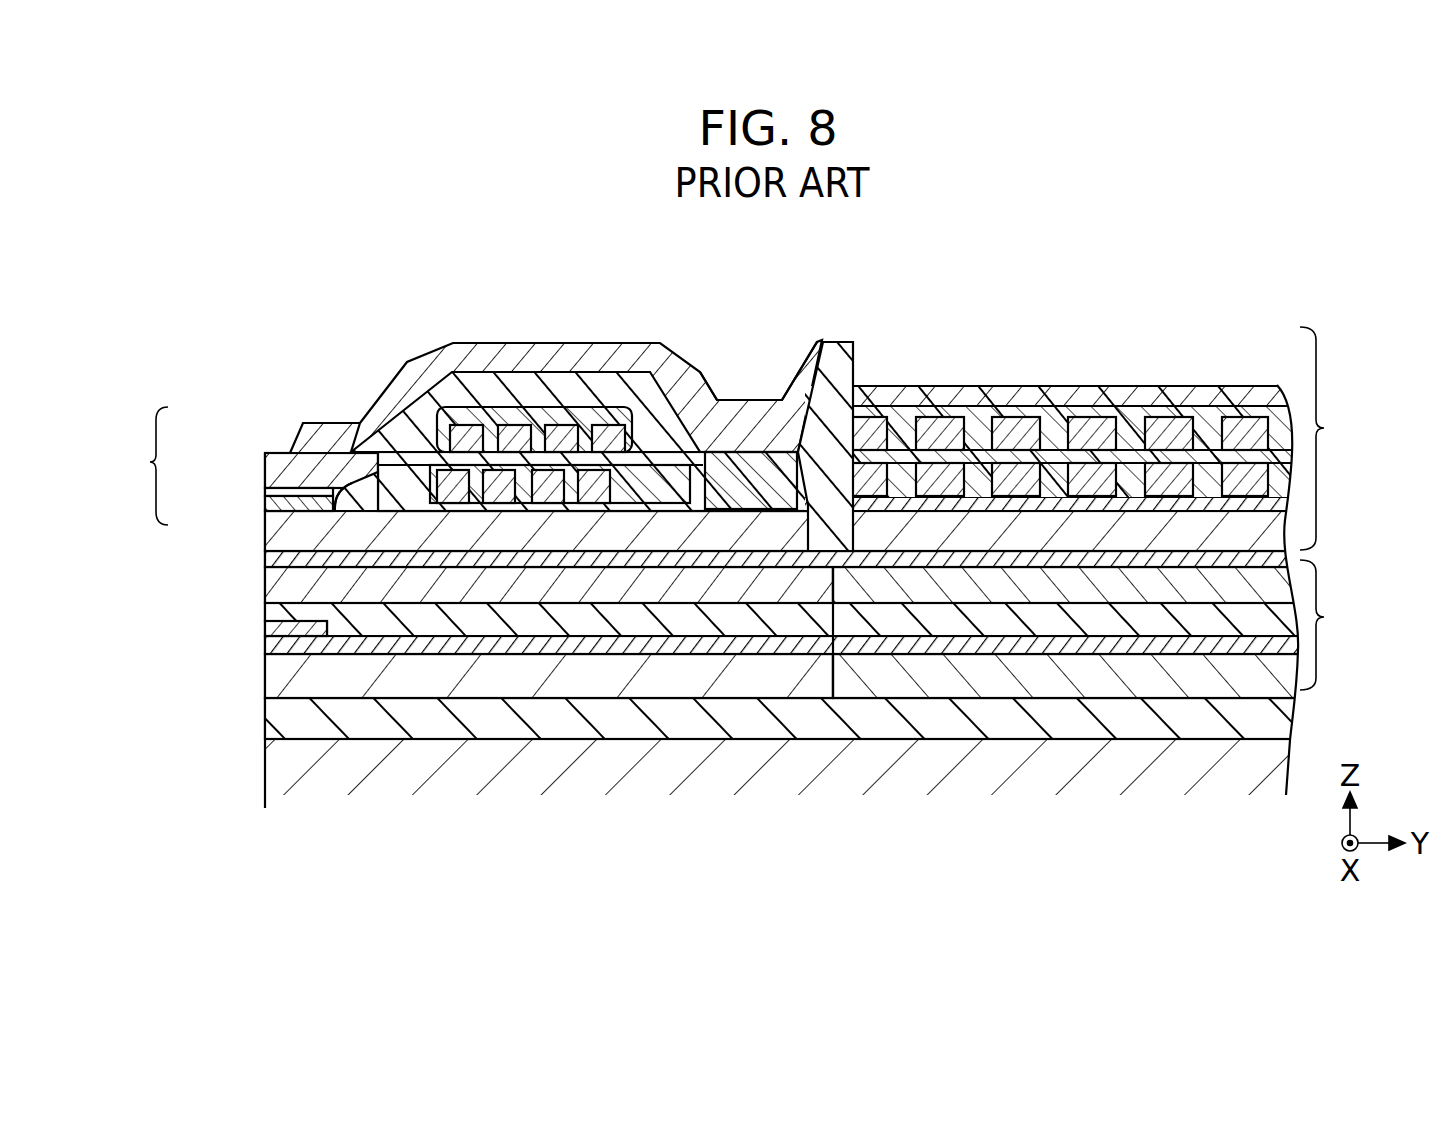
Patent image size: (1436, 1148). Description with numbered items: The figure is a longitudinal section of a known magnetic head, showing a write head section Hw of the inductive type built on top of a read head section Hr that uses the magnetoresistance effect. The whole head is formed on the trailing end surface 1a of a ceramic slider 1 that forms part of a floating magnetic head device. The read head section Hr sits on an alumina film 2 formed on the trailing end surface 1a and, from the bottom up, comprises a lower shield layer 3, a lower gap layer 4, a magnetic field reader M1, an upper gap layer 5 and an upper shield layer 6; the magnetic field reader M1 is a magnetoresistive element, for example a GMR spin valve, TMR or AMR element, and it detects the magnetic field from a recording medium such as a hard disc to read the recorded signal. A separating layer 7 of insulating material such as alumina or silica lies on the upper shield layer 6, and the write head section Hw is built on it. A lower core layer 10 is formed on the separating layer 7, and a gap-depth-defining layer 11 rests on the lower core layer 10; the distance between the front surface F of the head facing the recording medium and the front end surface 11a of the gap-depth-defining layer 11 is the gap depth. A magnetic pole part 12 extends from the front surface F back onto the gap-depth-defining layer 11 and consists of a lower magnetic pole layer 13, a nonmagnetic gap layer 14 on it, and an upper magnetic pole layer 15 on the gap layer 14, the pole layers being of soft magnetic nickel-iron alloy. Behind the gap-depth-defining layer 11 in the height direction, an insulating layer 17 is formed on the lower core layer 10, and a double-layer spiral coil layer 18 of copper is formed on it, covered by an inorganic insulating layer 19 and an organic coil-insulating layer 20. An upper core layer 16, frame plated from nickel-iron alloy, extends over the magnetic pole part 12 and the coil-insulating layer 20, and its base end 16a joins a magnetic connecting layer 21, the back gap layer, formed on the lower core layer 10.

The ceramic slider 1 is at (272, 780).
The trailing end surface 1a is at (1122, 738).
The Al2O3 film 2 is at (272, 715).
The lower shield layer 3 is at (272, 682).
The lower gap layer 4 is at (272, 650).
The upper gap layer 5 is at (272, 608).
The magnetic field reader M1 is at (272, 628).
The upper shield layer 6 is at (272, 582).
The separating layer 7 is at (272, 557).
The lower core layer 10 is at (272, 535).
The gap-depth-defining layer 11 is at (365, 497).
The front end surface 11a is at (343, 482).
The magnetic pole part 12 is at (139, 466).
The lower magnetic pole layer 13 is at (265, 502).
The nonmagnetic gap layer 14 is at (265, 492).
The upper magnetic pole layer 15 is at (265, 470).
The upper core layer 16 is at (458, 352).
The base end 16a is at (735, 440).
The insulating layer 17 is at (705, 468).
The coil layer 18 is at (524, 398).
The inorganic insulating layer 19 is at (650, 460).
The organic coil-insulating layer 20 is at (594, 390).
The magnetic connecting layer 21 is at (753, 478).
The front surface F is at (255, 760).
The write head section Hw is at (1338, 438).
The read head section Hr is at (1332, 625).